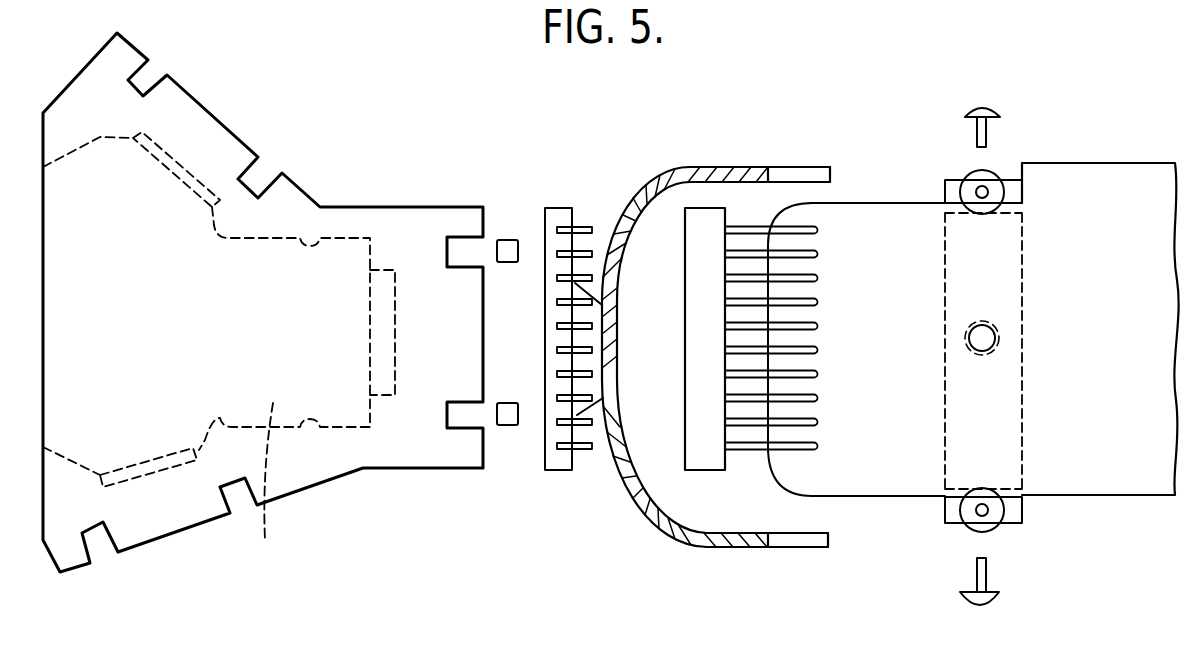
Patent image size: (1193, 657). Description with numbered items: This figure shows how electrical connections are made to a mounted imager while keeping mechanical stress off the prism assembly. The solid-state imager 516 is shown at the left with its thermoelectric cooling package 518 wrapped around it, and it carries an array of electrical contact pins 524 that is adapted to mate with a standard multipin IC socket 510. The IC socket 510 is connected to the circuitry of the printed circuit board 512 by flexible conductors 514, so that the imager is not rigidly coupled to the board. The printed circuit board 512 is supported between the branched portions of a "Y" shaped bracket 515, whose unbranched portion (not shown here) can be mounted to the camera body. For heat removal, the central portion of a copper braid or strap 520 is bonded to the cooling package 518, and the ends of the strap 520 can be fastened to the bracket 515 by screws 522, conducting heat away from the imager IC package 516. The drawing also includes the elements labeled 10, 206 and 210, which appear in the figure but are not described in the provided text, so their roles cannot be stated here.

The connector 10 is at (258, 488).
The housing 206 is at (315, 487).
The latch posts 210 is at (500, 236).
The multipin IC socket 510 is at (713, 458).
The printed circuit board 512 is at (1073, 192).
The flexible conductors 514 is at (825, 460).
The "Y" shaped bracket 515 is at (1015, 523).
The solid-state imager 516 is at (560, 462).
The thermoelectric cooling package 518 is at (598, 312).
The copper braid or strap 520 is at (662, 536).
The screws 522 is at (985, 108).
The electrical contact pins 524 is at (584, 213).